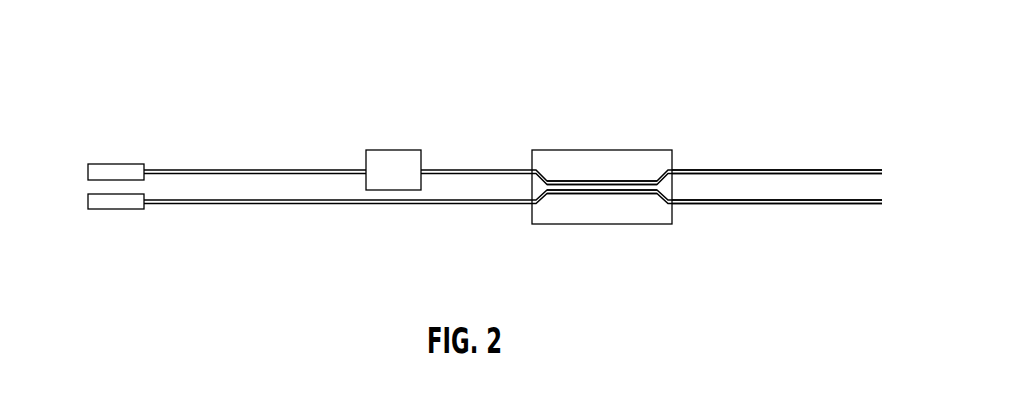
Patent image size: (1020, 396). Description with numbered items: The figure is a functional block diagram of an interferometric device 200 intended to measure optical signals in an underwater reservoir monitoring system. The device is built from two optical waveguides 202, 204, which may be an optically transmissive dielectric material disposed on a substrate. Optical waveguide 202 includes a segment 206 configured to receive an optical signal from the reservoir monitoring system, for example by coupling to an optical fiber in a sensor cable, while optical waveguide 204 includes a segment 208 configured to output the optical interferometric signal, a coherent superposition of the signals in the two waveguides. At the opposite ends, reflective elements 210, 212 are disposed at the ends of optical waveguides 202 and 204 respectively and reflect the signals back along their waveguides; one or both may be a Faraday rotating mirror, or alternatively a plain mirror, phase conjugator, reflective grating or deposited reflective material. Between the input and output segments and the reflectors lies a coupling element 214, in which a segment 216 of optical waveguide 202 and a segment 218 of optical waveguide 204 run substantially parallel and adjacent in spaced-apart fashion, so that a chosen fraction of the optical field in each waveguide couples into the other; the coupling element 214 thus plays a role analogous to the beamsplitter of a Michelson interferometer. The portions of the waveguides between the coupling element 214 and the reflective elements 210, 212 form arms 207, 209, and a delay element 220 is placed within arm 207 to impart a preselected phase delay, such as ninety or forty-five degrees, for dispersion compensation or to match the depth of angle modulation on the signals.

The interferometric device 200 is at (225, 46).
The optical waveguide 202 is at (462, 150).
The optical waveguide 204 is at (471, 212).
The segment 206 is at (776, 169).
The arm 207 is at (236, 169).
The segment 208 is at (777, 204).
The arm 209 is at (236, 204).
The reflective element 210 is at (117, 164).
The reflective element 212 is at (117, 209).
The coupling element 214 is at (618, 224).
The segment 216 is at (583, 181).
The segment 218 is at (568, 194).
The delay element 220 is at (391, 150).